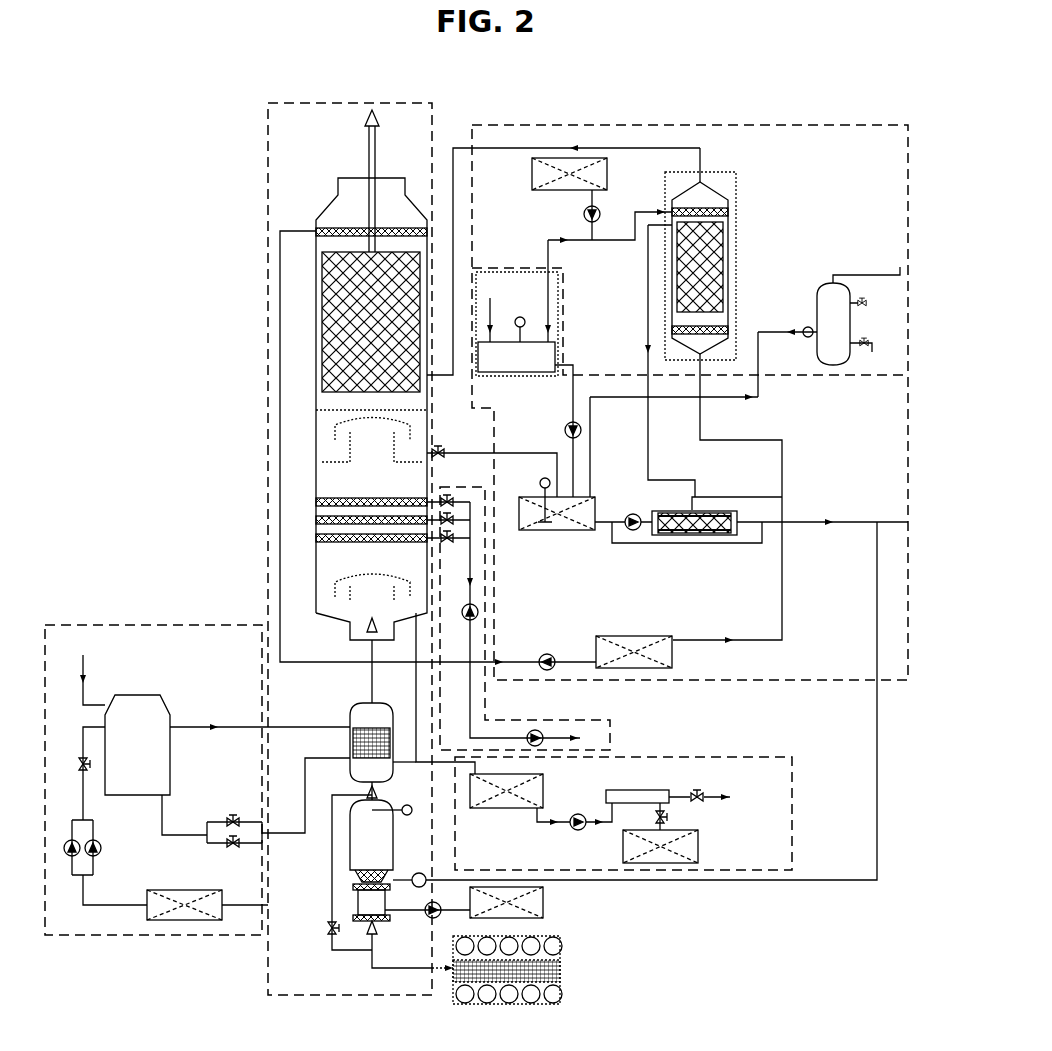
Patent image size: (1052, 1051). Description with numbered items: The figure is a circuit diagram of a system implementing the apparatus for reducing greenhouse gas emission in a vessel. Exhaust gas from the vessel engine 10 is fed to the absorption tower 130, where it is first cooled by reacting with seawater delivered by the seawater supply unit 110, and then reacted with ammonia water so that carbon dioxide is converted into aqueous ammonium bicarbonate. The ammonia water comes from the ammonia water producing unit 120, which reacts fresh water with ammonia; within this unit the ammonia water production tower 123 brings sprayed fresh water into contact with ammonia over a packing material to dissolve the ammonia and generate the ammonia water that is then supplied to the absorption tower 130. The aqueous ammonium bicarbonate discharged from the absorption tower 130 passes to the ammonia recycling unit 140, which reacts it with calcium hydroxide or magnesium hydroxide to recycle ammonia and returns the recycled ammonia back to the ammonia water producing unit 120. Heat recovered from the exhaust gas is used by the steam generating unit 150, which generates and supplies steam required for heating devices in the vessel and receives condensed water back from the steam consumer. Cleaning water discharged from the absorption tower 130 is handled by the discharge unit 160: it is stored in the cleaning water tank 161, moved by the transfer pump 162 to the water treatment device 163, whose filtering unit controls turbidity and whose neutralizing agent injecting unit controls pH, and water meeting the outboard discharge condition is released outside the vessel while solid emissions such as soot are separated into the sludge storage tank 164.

The vessel engine 10 is at (507, 981).
The seawater supply unit 110 is at (554, 717).
The ammonia water producing unit 120 is at (714, 123).
The ammonia water production tower 123 is at (735, 173).
The absorption tower 130 is at (368, 99).
The ammonia recycling unit 140 is at (947, 520).
The steam generating unit 150 is at (169, 620).
The discharge unit 160 is at (829, 821).
The cleaning water tank 161 is at (506, 791).
The transfer pump 162 is at (574, 814).
The water treatment device 163 is at (653, 788).
The sludge storage tank 164 is at (660, 833).